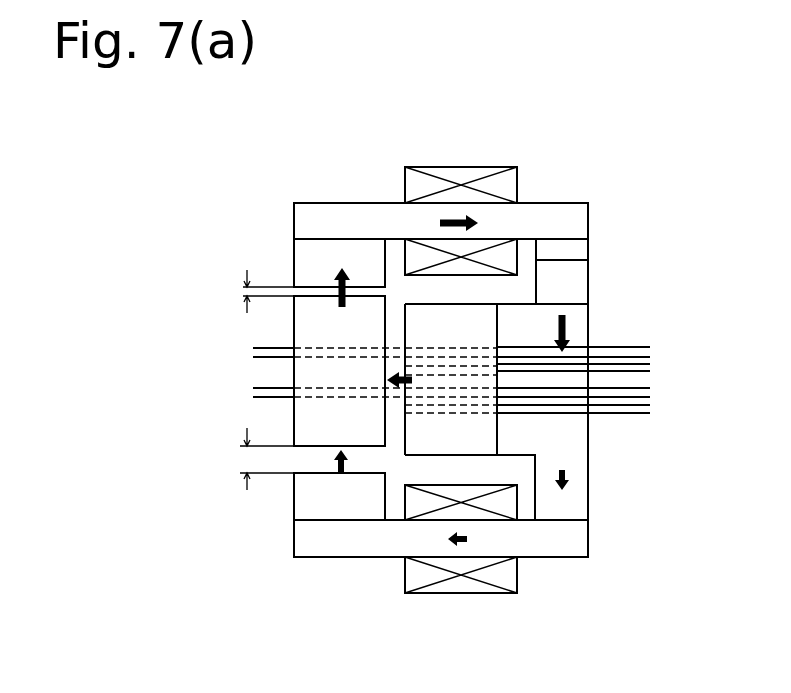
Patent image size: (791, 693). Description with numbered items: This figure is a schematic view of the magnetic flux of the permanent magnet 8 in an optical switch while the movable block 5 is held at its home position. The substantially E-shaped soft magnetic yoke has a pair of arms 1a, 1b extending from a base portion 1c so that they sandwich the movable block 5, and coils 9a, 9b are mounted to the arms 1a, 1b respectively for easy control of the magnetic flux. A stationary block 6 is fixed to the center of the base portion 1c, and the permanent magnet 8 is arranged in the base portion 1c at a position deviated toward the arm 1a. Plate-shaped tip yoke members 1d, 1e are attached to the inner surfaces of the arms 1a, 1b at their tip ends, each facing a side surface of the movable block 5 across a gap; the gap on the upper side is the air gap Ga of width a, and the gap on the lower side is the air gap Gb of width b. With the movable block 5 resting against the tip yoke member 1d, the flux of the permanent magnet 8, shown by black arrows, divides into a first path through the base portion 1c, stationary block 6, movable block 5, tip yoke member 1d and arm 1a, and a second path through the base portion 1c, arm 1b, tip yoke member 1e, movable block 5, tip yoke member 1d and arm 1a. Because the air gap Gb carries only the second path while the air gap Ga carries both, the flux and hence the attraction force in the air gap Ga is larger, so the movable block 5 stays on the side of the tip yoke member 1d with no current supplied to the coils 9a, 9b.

The arm 1a is at (342, 218).
The arm 1b is at (360, 540).
The base portion 1c is at (577, 453).
The tip yoke member 1d is at (308, 259).
The tip yoke member 1e is at (325, 505).
The movable block 5 is at (307, 320).
The stationary block 6 is at (467, 432).
The permanent magnet 8 is at (578, 278).
The coil 9a is at (470, 175).
The coil 9b is at (458, 585).
The air gap Ga is at (295, 291).
The air gap Gb is at (307, 460).
The upper gap width a is at (260, 291).
The lower gap width b is at (262, 459).